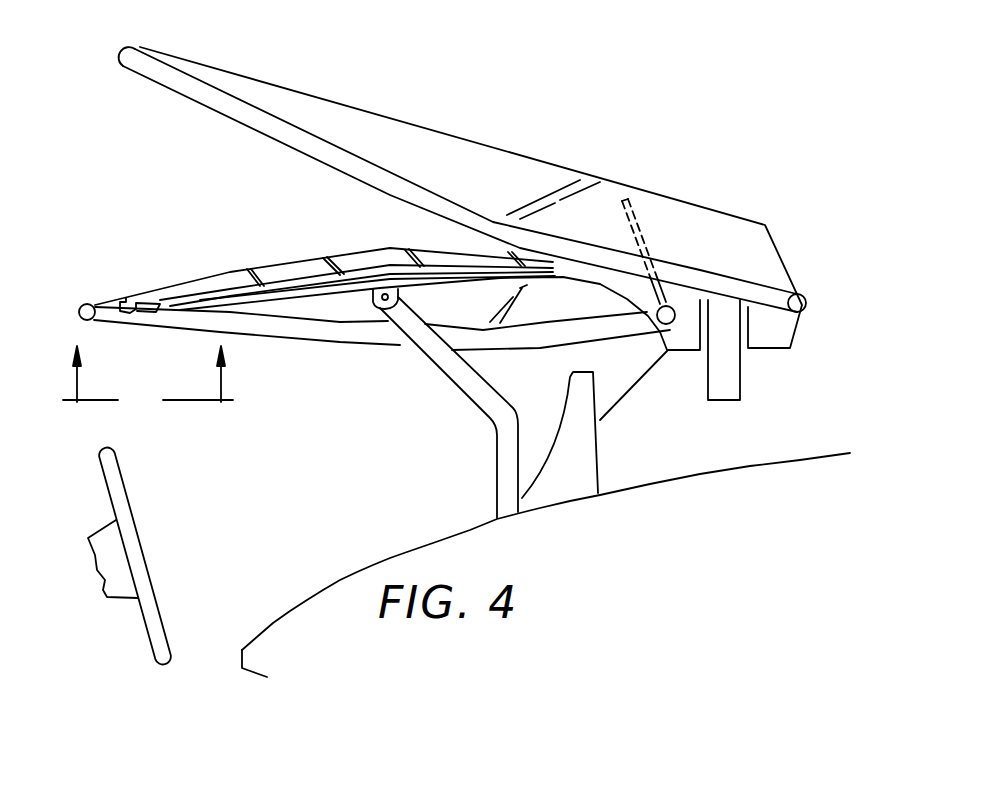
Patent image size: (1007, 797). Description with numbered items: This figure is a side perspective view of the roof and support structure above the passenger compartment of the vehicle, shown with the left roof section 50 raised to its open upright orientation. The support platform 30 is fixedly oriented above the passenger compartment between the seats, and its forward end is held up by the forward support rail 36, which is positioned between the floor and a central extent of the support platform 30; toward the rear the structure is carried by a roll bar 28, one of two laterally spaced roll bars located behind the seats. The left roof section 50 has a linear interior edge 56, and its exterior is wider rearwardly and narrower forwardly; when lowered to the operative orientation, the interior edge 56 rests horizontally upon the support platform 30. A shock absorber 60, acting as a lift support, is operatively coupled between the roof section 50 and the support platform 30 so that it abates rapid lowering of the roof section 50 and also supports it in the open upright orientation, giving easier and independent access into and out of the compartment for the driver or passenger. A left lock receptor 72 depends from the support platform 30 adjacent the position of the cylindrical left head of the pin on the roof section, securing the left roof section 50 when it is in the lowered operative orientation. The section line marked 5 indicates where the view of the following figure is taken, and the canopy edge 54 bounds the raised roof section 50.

The canopy frame rail 54 is at (393, 117).
The left roof section 50 is at (477, 157).
The linear interior edge 56 is at (307, 145).
The shock absorber 60 is at (657, 240).
The support platform 30 is at (255, 263).
The left lock receptor 72 is at (130, 298).
The forward support rail 36 is at (493, 407).
The roll bar 28 is at (732, 357).
The section line 5- 5 is at (153, 393).